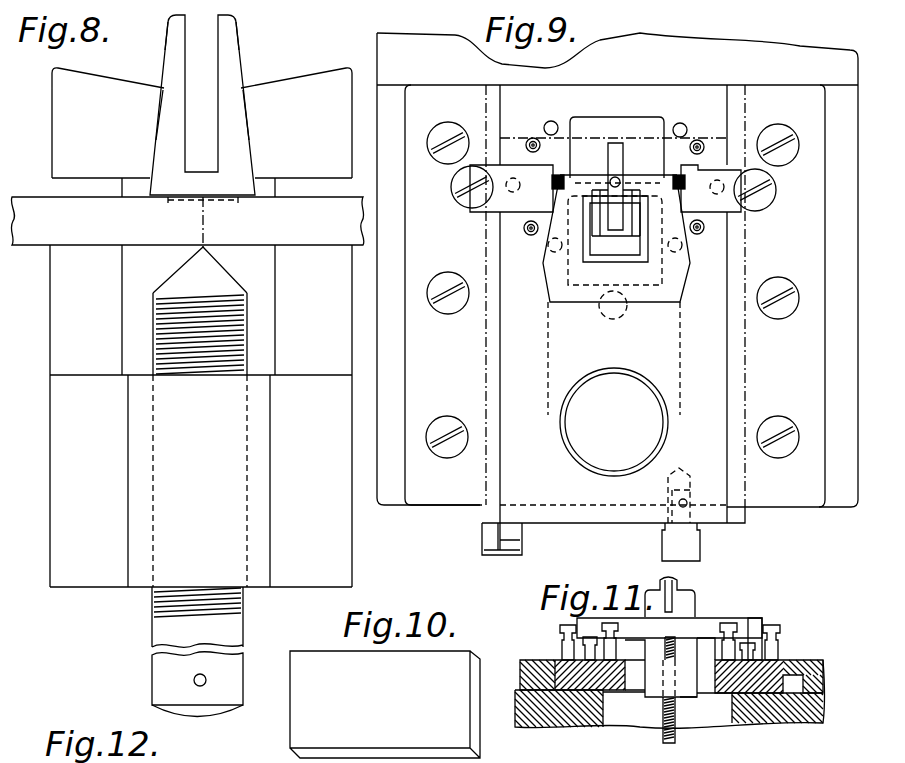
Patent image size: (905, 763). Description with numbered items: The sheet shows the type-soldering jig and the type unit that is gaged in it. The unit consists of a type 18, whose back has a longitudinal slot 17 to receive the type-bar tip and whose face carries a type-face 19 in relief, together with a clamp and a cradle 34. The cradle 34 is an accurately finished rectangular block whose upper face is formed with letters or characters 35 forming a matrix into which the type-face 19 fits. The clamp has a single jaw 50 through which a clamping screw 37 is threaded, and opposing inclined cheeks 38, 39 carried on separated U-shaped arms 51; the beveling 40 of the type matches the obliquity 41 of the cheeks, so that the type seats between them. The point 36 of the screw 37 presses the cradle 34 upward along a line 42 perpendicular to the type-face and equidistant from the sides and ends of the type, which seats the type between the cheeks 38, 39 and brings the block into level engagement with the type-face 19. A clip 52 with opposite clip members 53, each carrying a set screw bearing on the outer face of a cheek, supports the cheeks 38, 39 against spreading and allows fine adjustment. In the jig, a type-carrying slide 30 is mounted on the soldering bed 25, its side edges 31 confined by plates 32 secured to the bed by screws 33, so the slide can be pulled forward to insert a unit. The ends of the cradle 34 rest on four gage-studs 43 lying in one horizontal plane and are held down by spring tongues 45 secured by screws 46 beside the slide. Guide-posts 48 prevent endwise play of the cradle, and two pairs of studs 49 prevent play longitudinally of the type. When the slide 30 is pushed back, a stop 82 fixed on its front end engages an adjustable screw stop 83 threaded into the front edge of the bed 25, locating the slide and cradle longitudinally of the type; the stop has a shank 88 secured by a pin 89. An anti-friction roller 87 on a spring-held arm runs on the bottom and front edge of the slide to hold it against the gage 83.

In FIG. 8, the longitudinal slot 17 is at (201, 40).
In FIG. 11, the longitudinal slot 17 is at (673, 590).
In FIG. 8, the type 18 is at (250, 188).
In FIG. 9, the type 18 is at (608, 156).
In FIG. 8, the type-face 19 is at (224, 204).
In FIG. 9, the soldering bed 25 is at (838, 509).
In FIG. 11, the soldering bed 25 is at (778, 723).
In FIG. 9, the type-carrying slide 30 is at (613, 317).
In FIG. 11, the type-carrying slide 30 is at (735, 700).
In FIG. 9, the side edges 31 is at (745, 518).
In FIG. 9, the plates 32 is at (768, 92).
In FIG. 11, the plates 32 is at (536, 660).
In FIG. 9, the screws 33 is at (783, 286).
In FIG. 8, the cradle 34 is at (187, 221).
In FIG. 9, the cradle 34 is at (579, 135).
In FIG. 10, the cradle 34 is at (385, 704).
In FIG. 11, the cradle 34 is at (712, 623).
In FIG. 10, the letters or characters 35 is at (368, 727).
In FIG. 8, the point 36 is at (230, 271).
In FIG. 8, the clamping screw 37 is at (247, 327).
In FIG. 9, the clamping screw 37 is at (617, 177).
In FIG. 11, the clamping screw 37 is at (677, 738).
In FIG. 8, the cheek 38 is at (108, 123).
In FIG. 8, the cheek 39 is at (296, 123).
In FIG. 11, the cheek 39 is at (716, 591).
In FIG. 8, the beveling 40 is at (166, 58).
In FIG. 11, the beveling 40 is at (696, 590).
In FIG. 8, the obliquity 41 is at (158, 129).
In FIG. 8, the line 42 is at (200, 228).
In FIG. 9, the gage-studs 43 is at (530, 141).
In FIG. 11, the gage-studs 43 is at (590, 640).
In FIG. 9, the spring tongues 45 is at (492, 213).
In FIG. 9, the screws 46 is at (466, 201).
In FIG. 9, the guide-posts 48 is at (513, 178).
In FIG. 11, the guide-posts 48 is at (583, 645).
In FIG. 9, the studs 49 is at (554, 116).
In FIG. 11, the studs 49 is at (727, 651).
In FIG. 8, the jaw 50 is at (133, 543).
In FIG. 9, the jaw 50 is at (615, 229).
In FIG. 11, the jaw 50 is at (660, 697).
In FIG. 8, the arms 51 is at (122, 268).
In FIG. 9, the arms 51 is at (632, 262).
In FIG. 11, the arms 51 is at (665, 672).
In FIG. 9, the clip 52 is at (585, 302).
In FIG. 9, the clip members 53 is at (572, 172).
In FIG. 9, the stop 82 is at (702, 546).
In FIG. 9, the adjustable screw stop 83 is at (670, 491).
In FIG. 9, the anti-friction roller 87 is at (510, 557).
In FIG. 9, the shank 88 is at (688, 482).
In FIG. 9, the pin 89 is at (688, 503).